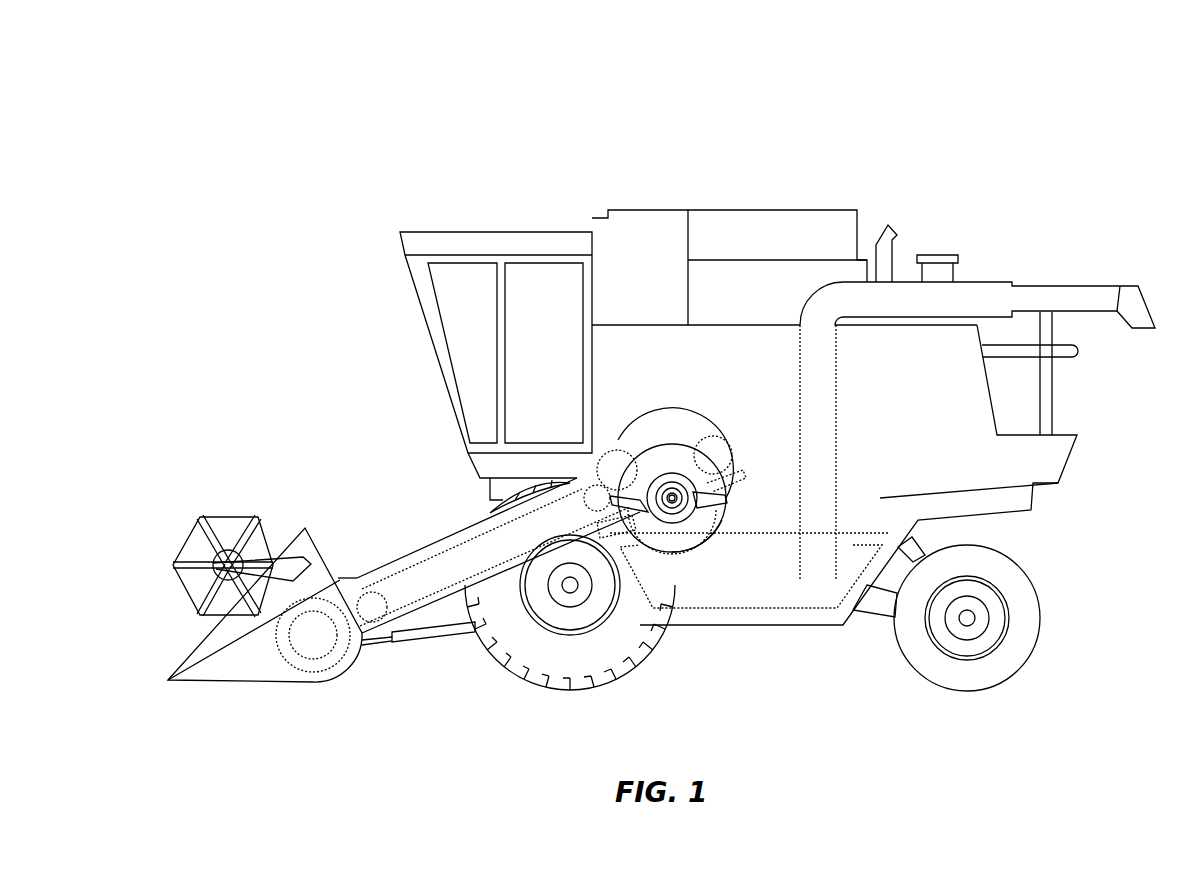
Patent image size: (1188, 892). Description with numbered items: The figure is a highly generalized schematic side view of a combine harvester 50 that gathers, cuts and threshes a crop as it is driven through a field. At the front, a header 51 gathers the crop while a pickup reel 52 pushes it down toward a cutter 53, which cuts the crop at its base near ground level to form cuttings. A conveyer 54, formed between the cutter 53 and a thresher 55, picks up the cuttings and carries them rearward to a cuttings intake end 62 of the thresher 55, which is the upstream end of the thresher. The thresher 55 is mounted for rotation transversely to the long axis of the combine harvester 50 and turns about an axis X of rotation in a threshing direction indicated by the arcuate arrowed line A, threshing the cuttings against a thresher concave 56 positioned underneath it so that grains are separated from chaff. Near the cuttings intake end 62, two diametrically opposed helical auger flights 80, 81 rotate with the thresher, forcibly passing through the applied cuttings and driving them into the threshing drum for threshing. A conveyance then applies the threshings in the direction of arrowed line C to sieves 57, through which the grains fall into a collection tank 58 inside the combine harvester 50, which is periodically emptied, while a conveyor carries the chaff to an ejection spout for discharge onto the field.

The combine harvester 50 is at (885, 85).
The header 51 is at (228, 672).
The pickup reel 52 is at (228, 517).
The cutter 53 is at (328, 648).
The conveyer 54 is at (404, 572).
The thresher 55 is at (672, 430).
The thresher concave 56 is at (720, 520).
The sieves 57 is at (820, 497).
The collection tank 58 is at (778, 584).
The cuttings intake end 62 is at (660, 520).
The helical auger flight 80 is at (688, 447).
The helical auger flight 81 is at (707, 548).
The axis of rotation X is at (673, 508).
The threshing direction of rotation A is at (617, 437).
The threshings application direction C is at (784, 490).